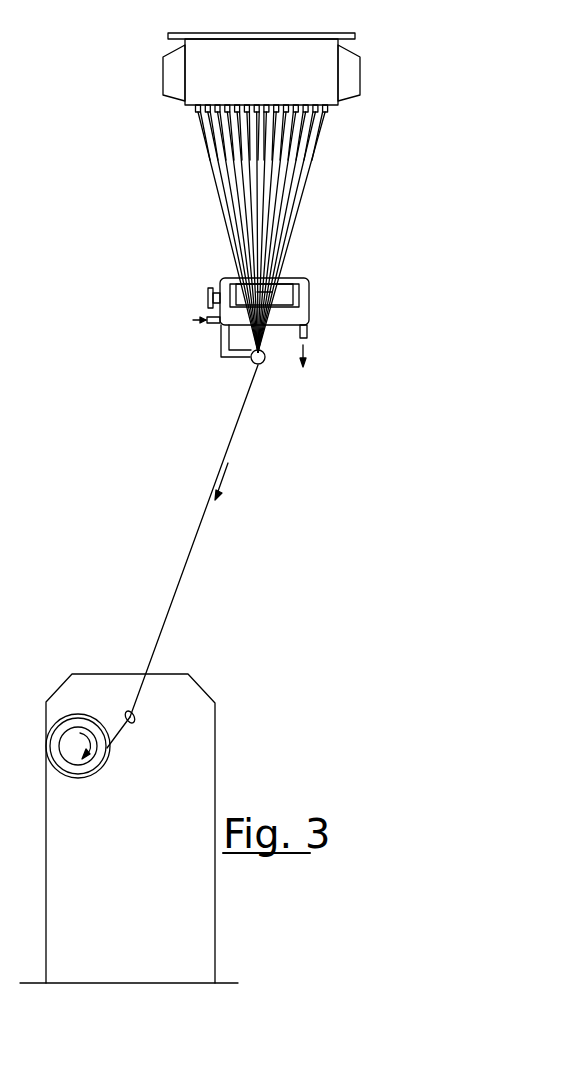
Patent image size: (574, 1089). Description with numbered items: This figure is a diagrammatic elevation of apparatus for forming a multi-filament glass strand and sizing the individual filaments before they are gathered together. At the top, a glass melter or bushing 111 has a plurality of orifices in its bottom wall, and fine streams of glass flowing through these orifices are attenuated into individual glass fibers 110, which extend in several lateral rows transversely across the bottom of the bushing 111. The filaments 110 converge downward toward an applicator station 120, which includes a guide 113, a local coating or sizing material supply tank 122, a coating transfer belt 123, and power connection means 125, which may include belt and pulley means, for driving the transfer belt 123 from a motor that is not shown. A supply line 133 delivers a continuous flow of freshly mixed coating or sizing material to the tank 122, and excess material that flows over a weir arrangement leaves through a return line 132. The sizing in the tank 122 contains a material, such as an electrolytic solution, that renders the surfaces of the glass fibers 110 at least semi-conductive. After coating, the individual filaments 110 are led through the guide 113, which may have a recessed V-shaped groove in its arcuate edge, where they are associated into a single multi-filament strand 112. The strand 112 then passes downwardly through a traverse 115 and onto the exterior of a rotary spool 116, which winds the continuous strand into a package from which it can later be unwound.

The glass fibers 110 is at (240, 160).
The bushing 111 is at (336, 30).
The multi-filament strand 112 is at (201, 518).
The guide 113 is at (251, 362).
The traverse 115 is at (135, 713).
The rotary spool 116 is at (104, 768).
The applicator station 120 is at (264, 298).
The sizing material supply tank 122 is at (310, 298).
The coating transfer belt 123 is at (290, 284).
The power connection means 125 is at (208, 292).
The return line 132 is at (307, 332).
The supply line 133 is at (206, 322).